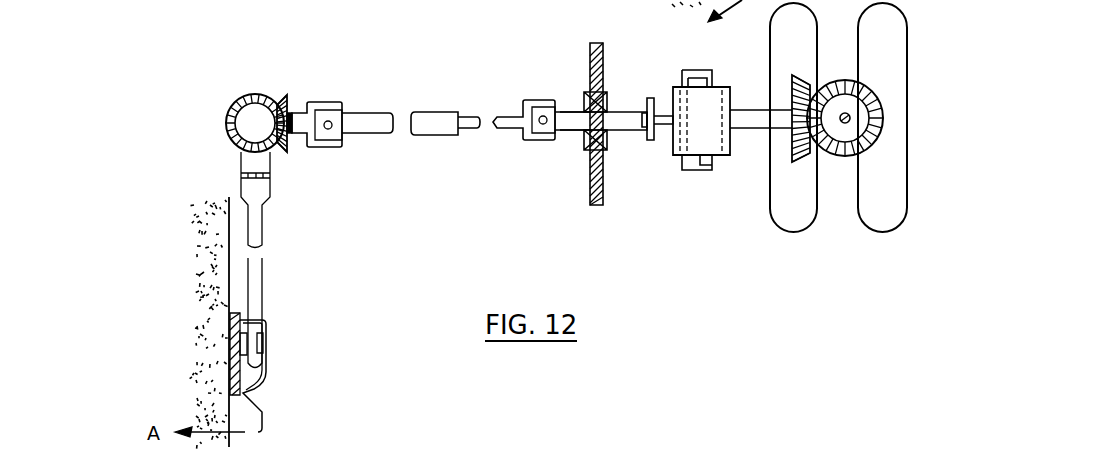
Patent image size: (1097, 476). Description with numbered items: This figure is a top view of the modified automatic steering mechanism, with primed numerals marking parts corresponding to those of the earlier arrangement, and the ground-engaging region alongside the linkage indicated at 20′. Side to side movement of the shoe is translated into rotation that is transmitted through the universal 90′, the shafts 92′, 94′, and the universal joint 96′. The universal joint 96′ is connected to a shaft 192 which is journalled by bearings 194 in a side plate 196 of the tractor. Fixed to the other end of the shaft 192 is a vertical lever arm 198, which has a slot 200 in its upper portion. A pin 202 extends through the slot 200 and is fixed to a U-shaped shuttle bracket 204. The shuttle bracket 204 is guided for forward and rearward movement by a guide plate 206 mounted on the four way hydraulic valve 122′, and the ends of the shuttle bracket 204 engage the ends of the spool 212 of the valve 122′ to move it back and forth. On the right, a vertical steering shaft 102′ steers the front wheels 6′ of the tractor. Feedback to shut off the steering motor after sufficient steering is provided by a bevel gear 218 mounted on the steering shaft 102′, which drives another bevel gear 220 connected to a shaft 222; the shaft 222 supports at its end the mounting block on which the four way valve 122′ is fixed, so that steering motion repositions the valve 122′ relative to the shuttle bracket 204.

The front wheels 6′ is at (907, 48).
The ground wall 20′ is at (229, 262).
The universal 90′ is at (320, 103).
The shaft 92′ is at (375, 113).
The shaft 94′ is at (468, 112).
The universal joint 96′ is at (535, 100).
The shaft 192 is at (570, 133).
The bearings 194 is at (578, 112).
The side plate 196 is at (603, 52).
The vertical lever arm 198 is at (645, 110).
The slot 200 is at (649, 98).
The pin 202 is at (640, 131).
The U-shaped shuttle bracket 204 is at (693, 70).
The guide plate 206 is at (675, 150).
The spool 212 is at (698, 168).
The four way hydraulic valve 122′ is at (718, 158).
The shaft 222 is at (752, 129).
The bevel gear 220 is at (792, 90).
The bevel gear 218 is at (843, 79).
The vertical steering shaft 102′ is at (850, 118).